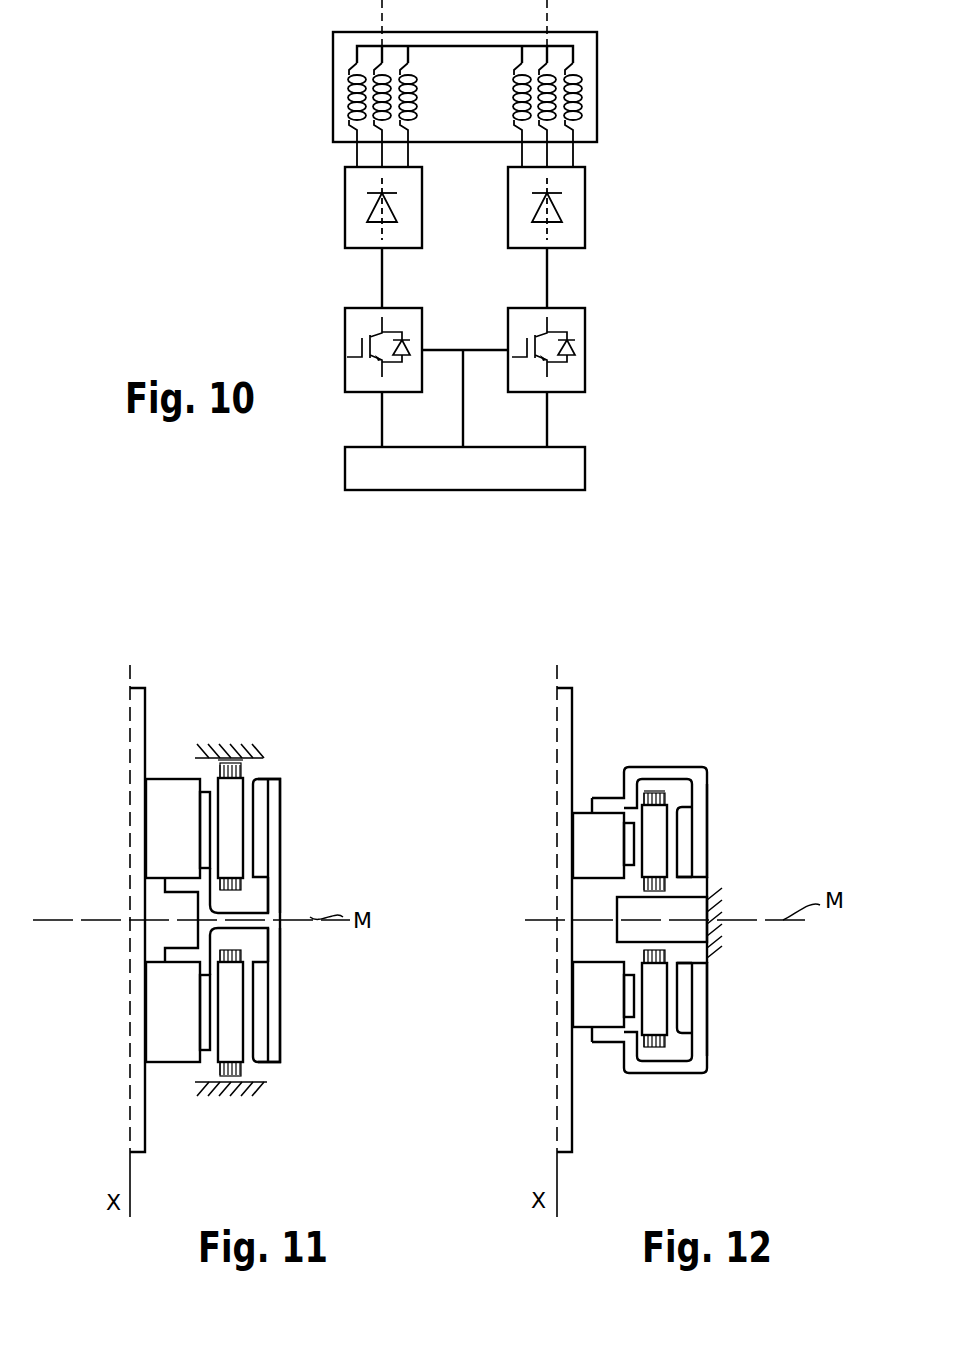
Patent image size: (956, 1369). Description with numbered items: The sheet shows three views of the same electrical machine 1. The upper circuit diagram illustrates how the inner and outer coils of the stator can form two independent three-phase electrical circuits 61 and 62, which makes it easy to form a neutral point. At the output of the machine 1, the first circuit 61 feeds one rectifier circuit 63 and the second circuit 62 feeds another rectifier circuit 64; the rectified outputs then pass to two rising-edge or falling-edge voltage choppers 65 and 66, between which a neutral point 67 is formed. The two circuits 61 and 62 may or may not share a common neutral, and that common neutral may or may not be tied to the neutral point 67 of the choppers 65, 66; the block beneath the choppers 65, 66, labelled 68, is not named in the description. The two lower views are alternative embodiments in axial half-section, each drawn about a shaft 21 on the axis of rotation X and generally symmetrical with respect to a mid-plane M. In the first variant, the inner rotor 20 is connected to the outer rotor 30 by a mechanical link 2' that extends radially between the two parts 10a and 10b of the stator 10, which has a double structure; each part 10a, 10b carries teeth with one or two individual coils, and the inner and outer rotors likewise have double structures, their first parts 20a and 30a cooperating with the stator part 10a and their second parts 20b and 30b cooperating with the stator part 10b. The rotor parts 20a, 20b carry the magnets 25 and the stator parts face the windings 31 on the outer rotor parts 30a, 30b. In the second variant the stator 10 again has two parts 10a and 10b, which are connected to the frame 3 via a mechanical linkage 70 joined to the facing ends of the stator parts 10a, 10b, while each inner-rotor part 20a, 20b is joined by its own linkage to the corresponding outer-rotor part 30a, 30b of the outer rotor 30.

In FIG. 10, the machine 1 is at (345, 35).
In FIG. 10, the first three-phase electrical circuit 61 is at (347, 90).
In FIG. 10, the second three-phase electrical circuit 62 is at (580, 90).
In FIG. 10, the rectifier circuit 63 is at (345, 205).
In FIG. 10, the rectifier circuit 64 is at (585, 213).
In FIG. 10, the rising-edge or falling-edge voltage chopper 65 is at (345, 330).
In FIG. 10, the rising-edge or falling-edge voltage chopper 66 is at (585, 325).
In FIG. 10, the neutral point 67 is at (447, 350).
In FIG. 10, the energy storage / battery 68 is at (357, 468).
In FIG. 11, the shaft 21 is at (130, 742).
In FIG. 12, the shaft 21 is at (557, 742).
In FIG. 11, the inner rotor 20 is at (167, 1088).
In FIG. 12, the inner rotor 20 is at (597, 1055).
In FIG. 11, the first part of the inner rotor 20a is at (167, 805).
In FIG. 12, the first part of the inner rotor 20a is at (593, 835).
In FIG. 11, the second part of the inner rotor 20b is at (163, 978).
In FIG. 12, the second part of the inner rotor 20b is at (585, 970).
In FIG. 11, the permanent magnets 25 is at (203, 807).
In FIG. 12, the permanent magnets 25 is at (625, 835).
In FIG. 11, the stator 10 is at (248, 768).
In FIG. 12, the stator 10 is at (650, 788).
In FIG. 11, the first part of the stator 10a is at (230, 842).
In FIG. 12, the first part of the stator 10a is at (657, 853).
In FIG. 11, the second part of the stator 10b is at (230, 1037).
In FIG. 12, the second part of the stator 10b is at (658, 980).
In FIG. 11, the frame 3 is at (232, 745).
In FIG. 12, the frame 3 is at (715, 893).
In FIG. 11, the mechanical link 2' is at (267, 917).
In FIG. 11, the stator winding 31 is at (260, 803).
In FIG. 12, the stator winding 31 is at (683, 852).
In FIG. 11, the outer rotor 30 is at (273, 1075).
In FIG. 12, the outer rotor 30 is at (718, 1068).
In FIG. 11, the first part of the outer rotor 30a is at (272, 845).
In FIG. 12, the first part of the outer rotor 30a is at (700, 800).
In FIG. 11, the second part of the outer rotor 30b is at (272, 1023).
In FIG. 12, the second part of the outer rotor 30b is at (700, 1038).
In FIG. 12, the mechanical linkage 70 is at (618, 905).